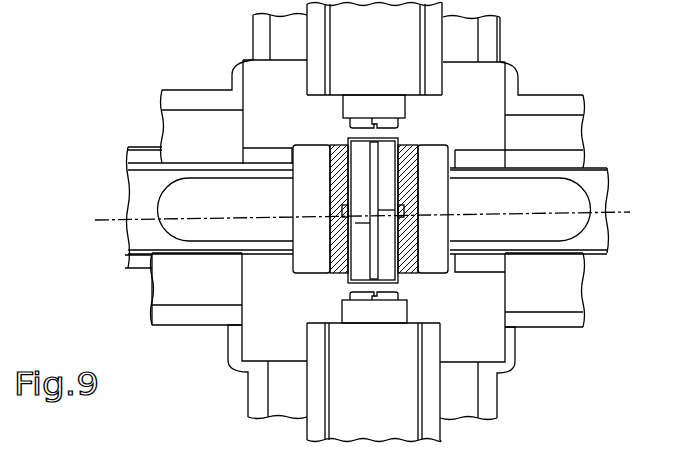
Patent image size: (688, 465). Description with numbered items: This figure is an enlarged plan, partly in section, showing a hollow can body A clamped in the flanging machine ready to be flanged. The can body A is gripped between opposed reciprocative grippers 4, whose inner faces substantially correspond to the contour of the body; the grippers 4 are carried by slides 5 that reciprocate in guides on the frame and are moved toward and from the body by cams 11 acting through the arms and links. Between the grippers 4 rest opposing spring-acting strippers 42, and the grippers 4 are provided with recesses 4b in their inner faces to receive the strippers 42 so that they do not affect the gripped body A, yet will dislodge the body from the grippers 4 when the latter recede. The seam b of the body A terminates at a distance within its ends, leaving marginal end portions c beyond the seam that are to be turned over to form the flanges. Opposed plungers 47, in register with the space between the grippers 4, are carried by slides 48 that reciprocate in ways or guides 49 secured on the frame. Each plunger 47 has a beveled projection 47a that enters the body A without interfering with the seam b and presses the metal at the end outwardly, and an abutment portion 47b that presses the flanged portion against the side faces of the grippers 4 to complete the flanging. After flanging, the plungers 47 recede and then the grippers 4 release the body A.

The grippers 4 is at (342, 173).
The recesses 4b is at (405, 202).
The slides 5 is at (138, 182).
The cams 11 is at (108, 263).
The strippers 42 is at (342, 210).
The plungers 47 is at (374, 209).
The projections 47a is at (350, 296).
The abutment portions 47b is at (399, 128).
The slides 48 is at (374, 222).
The guides 49 is at (374, 217).
The can body A is at (366, 210).
The seam b is at (362, 200).
The marginal end portion c is at (400, 143).